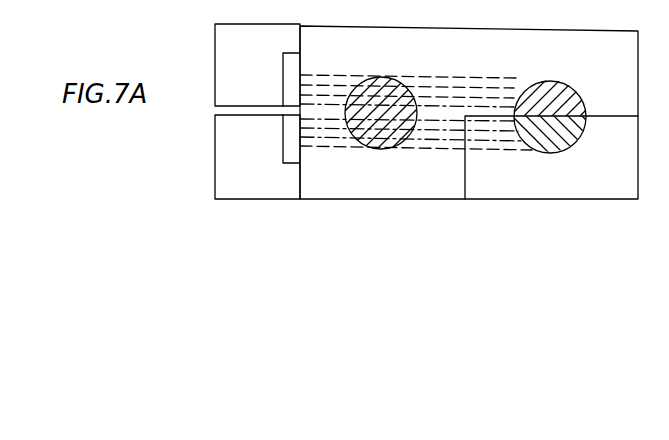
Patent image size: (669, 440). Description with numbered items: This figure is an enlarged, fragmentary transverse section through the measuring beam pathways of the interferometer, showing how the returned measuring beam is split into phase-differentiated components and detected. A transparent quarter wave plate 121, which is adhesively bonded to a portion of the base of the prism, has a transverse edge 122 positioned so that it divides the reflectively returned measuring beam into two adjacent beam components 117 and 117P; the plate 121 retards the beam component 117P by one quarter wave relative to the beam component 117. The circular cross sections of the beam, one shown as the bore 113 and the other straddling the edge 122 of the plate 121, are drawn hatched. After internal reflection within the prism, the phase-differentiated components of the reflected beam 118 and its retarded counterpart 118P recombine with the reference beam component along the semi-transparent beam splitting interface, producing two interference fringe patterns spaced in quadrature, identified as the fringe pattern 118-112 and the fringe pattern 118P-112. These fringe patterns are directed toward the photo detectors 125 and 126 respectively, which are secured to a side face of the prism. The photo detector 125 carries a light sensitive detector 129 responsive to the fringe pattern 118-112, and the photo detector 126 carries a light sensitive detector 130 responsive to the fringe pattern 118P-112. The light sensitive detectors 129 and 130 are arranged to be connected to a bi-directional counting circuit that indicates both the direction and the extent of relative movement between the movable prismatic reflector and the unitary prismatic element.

The photo detector 125 is at (230, 34).
The photo detector 126 is at (230, 123).
The light sensitive detector 129 is at (288, 70).
The light sensitive detector 130 is at (283, 152).
The reflected beam 118 is at (453, 92).
The interference fringe pattern 118-112 is at (317, 90).
The phase retarded reflected beam component 118P is at (440, 130).
The phase differentiated interference fringe pattern 118P-112 is at (318, 128).
The first bore 113 is at (385, 78).
The beam component 117 is at (516, 93).
The beam component 117P is at (545, 151).
The quarter wave plate 121 is at (500, 180).
The transverse edge 122 is at (612, 117).